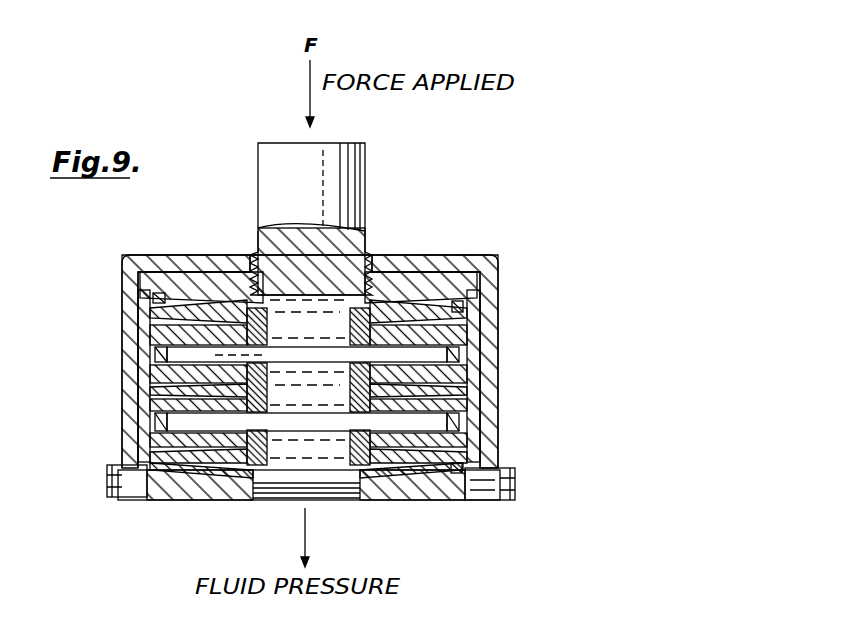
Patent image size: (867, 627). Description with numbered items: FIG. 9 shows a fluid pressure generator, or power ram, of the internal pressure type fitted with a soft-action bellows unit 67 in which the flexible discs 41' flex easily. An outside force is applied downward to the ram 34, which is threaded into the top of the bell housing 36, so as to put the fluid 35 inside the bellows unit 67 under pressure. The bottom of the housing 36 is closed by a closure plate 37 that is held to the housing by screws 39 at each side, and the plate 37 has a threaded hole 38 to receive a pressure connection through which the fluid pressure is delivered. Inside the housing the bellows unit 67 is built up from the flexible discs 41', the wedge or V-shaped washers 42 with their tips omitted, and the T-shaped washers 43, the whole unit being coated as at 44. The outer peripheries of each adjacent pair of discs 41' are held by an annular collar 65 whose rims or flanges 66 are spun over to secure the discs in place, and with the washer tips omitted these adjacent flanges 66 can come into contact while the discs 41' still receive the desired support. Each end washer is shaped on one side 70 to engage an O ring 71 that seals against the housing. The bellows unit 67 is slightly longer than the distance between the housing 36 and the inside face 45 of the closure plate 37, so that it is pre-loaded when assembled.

The ram 34 is at (346, 171).
The housing 36 is at (392, 262).
The O ring 71 is at (448, 302).
The flanges 66 is at (150, 308).
The fluid 35 is at (423, 357).
The flexible discs 41' is at (99, 360).
The V-shaped washers 42 is at (255, 362).
The annular collar 65 is at (480, 358).
The coating 44 is at (340, 398).
The T-shaped washers 43 is at (160, 416).
The screws 39 is at (108, 470).
The inside face 45 is at (462, 468).
The closure plate 37 is at (165, 495).
The other side of end washer 70 is at (321, 321).
The threaded hole 38 is at (278, 498).
The bellows unit 67 is at (337, 453).